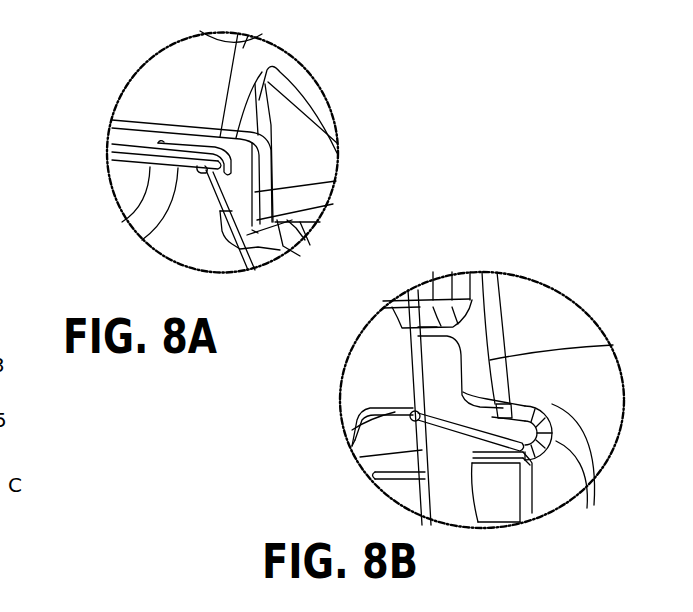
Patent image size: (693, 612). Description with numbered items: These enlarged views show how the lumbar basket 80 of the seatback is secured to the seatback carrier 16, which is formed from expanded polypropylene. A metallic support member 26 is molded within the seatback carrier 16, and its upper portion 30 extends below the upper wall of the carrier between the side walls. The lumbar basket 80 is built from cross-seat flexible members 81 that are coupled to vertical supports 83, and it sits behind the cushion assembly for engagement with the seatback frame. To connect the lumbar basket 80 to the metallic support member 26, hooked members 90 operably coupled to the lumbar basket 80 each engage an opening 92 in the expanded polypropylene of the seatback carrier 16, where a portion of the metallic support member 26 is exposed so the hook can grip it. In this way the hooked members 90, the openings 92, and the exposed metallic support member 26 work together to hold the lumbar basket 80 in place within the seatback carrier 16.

In FIG. 8A, the seatback carrier 16 is at (294, 128).
In FIG. 8B, the seatback carrier 16 is at (532, 307).
In FIG. 8A, the metallic support member 26 is at (122, 221).
In FIG. 8B, the metallic support member 26 is at (525, 420).
In FIG. 8A, the upper portion 30 is at (142, 239).
In FIG. 8B, the lumbar basket 80 is at (413, 365).
In FIG. 8B, the cross-seat flexible members 81 is at (348, 431).
In FIG. 8A, the vertical supports 83 is at (230, 212).
In FIG. 8B, the vertical supports 83 is at (422, 452).
In FIG. 8B, the hooked members 90 is at (515, 420).
In FIG. 8B, the opening 92 is at (550, 433).